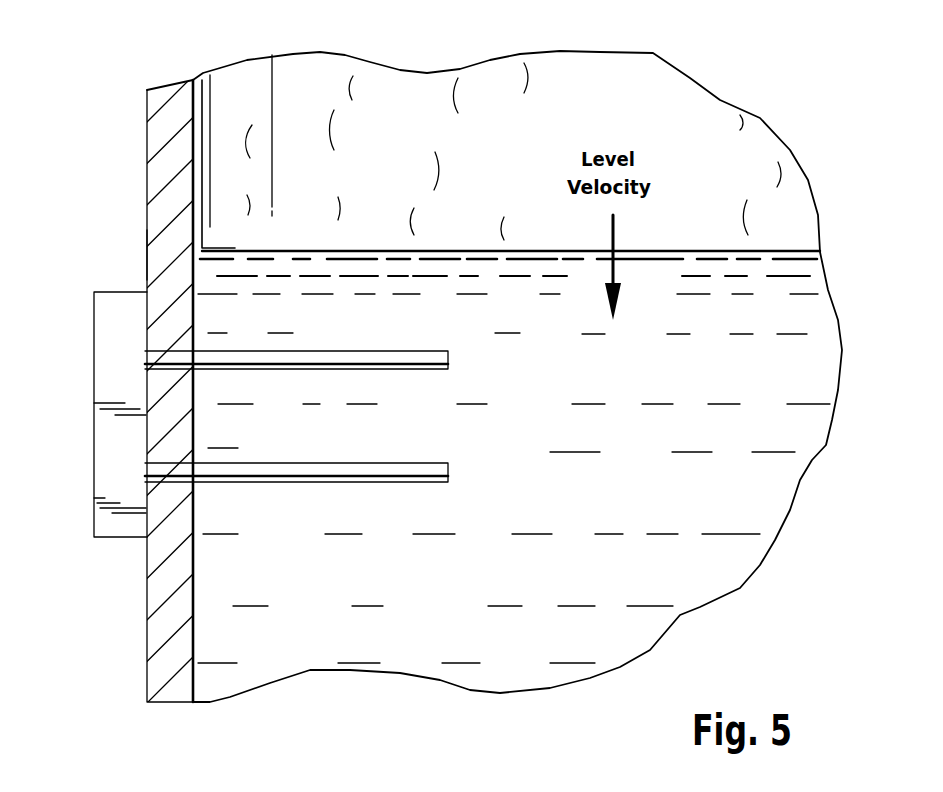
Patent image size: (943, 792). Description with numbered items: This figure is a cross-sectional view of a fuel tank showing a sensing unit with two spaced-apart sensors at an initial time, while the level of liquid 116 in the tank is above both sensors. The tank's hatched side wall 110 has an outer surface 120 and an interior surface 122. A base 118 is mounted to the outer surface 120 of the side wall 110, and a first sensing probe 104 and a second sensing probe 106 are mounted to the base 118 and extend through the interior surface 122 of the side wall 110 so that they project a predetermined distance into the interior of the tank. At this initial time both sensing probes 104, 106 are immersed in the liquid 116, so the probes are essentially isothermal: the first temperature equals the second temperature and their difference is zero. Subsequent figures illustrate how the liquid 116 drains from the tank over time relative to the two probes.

The first sensing probe 104 is at (410, 351).
The second sensing probe 106 is at (410, 463).
The side wall 110 is at (152, 159).
The liquid 116 is at (577, 440).
The base 118 is at (107, 376).
The outer surface 120 is at (147, 253).
The interior surface 122 is at (203, 228).